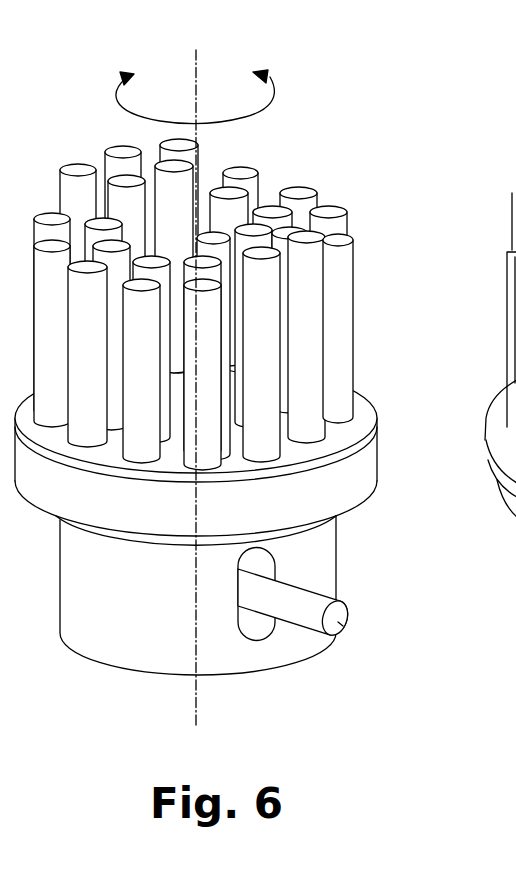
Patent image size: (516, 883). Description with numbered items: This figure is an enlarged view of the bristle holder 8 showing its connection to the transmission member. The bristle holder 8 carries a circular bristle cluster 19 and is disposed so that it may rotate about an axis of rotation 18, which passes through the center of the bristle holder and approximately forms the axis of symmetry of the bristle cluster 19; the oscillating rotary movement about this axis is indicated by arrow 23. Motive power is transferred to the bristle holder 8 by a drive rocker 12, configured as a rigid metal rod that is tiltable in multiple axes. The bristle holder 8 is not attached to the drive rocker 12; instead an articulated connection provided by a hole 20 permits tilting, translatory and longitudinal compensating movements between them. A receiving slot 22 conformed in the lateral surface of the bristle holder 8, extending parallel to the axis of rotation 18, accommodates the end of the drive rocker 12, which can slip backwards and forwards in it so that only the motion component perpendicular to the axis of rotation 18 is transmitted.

The bristle holder 8 is at (366, 464).
The drive rocker 12 is at (344, 631).
The axis of rotation 18 is at (197, 103).
The bristle cluster 19 is at (343, 272).
The hole 20 is at (264, 640).
The receiving slot 22 is at (245, 631).
The arrow 23 is at (254, 113).